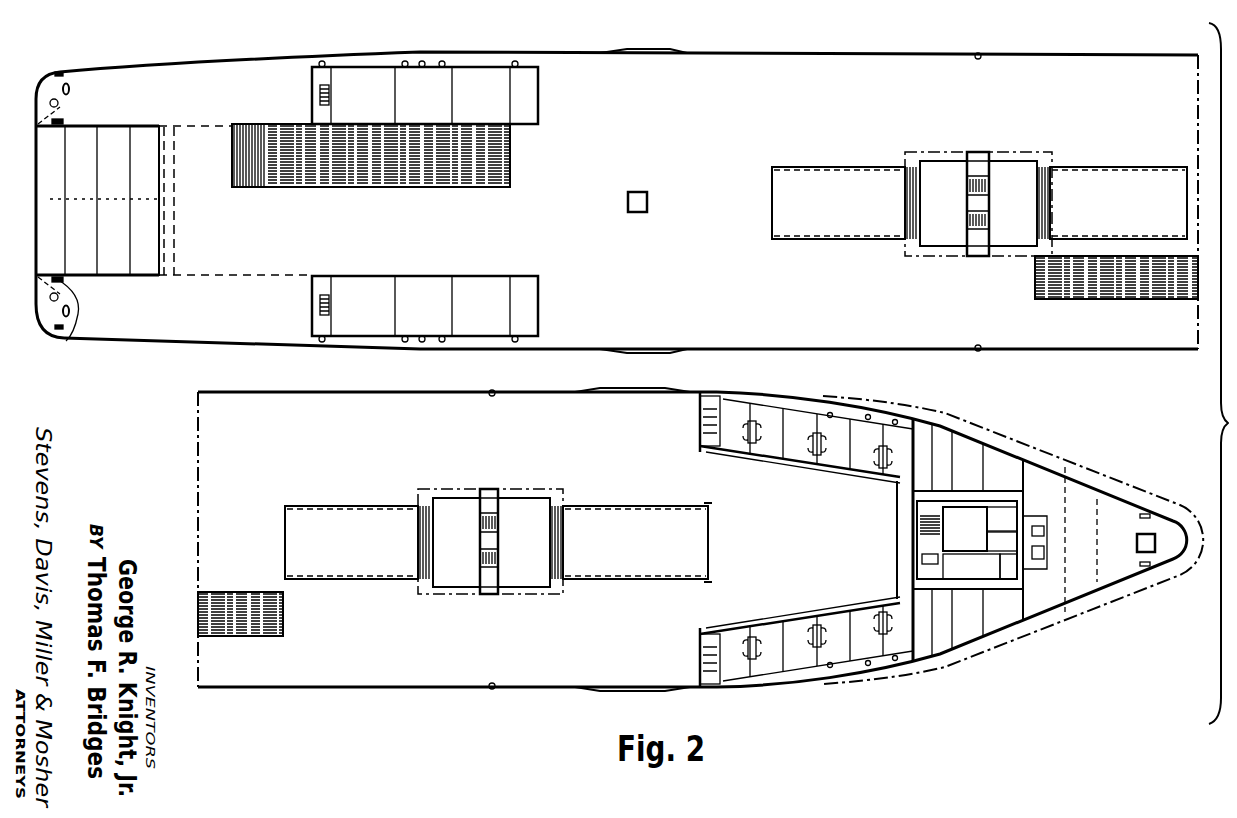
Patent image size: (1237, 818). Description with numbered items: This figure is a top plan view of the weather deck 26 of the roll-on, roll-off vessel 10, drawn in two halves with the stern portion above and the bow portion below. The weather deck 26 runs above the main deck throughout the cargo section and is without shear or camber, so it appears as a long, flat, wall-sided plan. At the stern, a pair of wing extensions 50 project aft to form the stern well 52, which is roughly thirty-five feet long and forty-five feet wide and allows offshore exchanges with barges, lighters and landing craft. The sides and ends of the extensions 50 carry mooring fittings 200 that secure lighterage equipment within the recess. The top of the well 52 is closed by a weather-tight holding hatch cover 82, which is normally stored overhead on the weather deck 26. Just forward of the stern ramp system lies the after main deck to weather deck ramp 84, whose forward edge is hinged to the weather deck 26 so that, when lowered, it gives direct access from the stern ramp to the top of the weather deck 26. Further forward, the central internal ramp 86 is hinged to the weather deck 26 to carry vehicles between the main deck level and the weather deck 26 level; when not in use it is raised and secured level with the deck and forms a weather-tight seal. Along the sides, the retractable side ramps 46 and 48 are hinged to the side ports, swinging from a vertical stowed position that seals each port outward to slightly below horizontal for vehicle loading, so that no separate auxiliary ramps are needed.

The roll-on, roll-off vessel 10 is at (824, 52).
The weather deck 26 is at (670, 266).
The retractable side ramp 46 is at (646, 52).
The retractable side ramp 48 is at (612, 390).
The wing extensions 50 is at (102, 83).
The stern well 52 is at (118, 222).
The holding hatch cover 82 is at (163, 155).
The main deck to weather deck ramp 84 is at (483, 172).
The ramp 86 is at (1125, 292).
The mooring fittings 200 is at (88, 91).